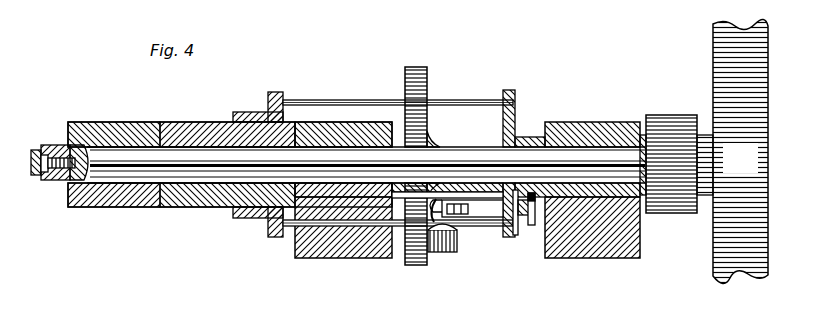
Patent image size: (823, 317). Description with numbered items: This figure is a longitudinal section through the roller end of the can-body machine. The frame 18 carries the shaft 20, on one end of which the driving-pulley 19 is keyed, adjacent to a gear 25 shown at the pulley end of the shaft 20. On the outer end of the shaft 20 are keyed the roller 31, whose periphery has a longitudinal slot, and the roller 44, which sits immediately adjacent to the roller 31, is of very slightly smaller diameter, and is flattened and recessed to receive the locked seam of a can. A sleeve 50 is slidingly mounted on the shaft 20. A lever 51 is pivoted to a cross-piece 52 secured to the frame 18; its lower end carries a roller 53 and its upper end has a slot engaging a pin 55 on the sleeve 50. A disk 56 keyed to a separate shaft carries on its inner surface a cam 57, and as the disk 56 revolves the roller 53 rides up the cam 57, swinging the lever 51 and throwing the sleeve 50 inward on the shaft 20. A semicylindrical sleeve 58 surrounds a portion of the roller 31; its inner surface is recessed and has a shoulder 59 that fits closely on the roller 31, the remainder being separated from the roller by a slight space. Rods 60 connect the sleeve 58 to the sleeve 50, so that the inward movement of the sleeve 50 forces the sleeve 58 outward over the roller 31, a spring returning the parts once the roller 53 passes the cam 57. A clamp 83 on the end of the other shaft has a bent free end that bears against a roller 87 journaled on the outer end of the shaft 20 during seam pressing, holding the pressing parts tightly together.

The frame 18 is at (345, 253).
The driving-pulley 19 is at (740, 151).
The shaft 20 is at (79, 154).
The gear 25 is at (683, 148).
The roller 31 is at (195, 128).
The roller 44 is at (121, 200).
The sleeve 50 is at (520, 134).
The lever 51 is at (460, 236).
The cross-piece 52 is at (441, 194).
The roller 53 is at (477, 203).
The pin 55 is at (532, 225).
The disk 56 is at (413, 264).
The cam 57 is at (446, 249).
The semicylindrical sleeve 58 is at (261, 220).
The shoulder 59 is at (285, 106).
The rods 60 is at (460, 101).
The clamp 83 is at (34, 176).
The roller 87 is at (50, 143).